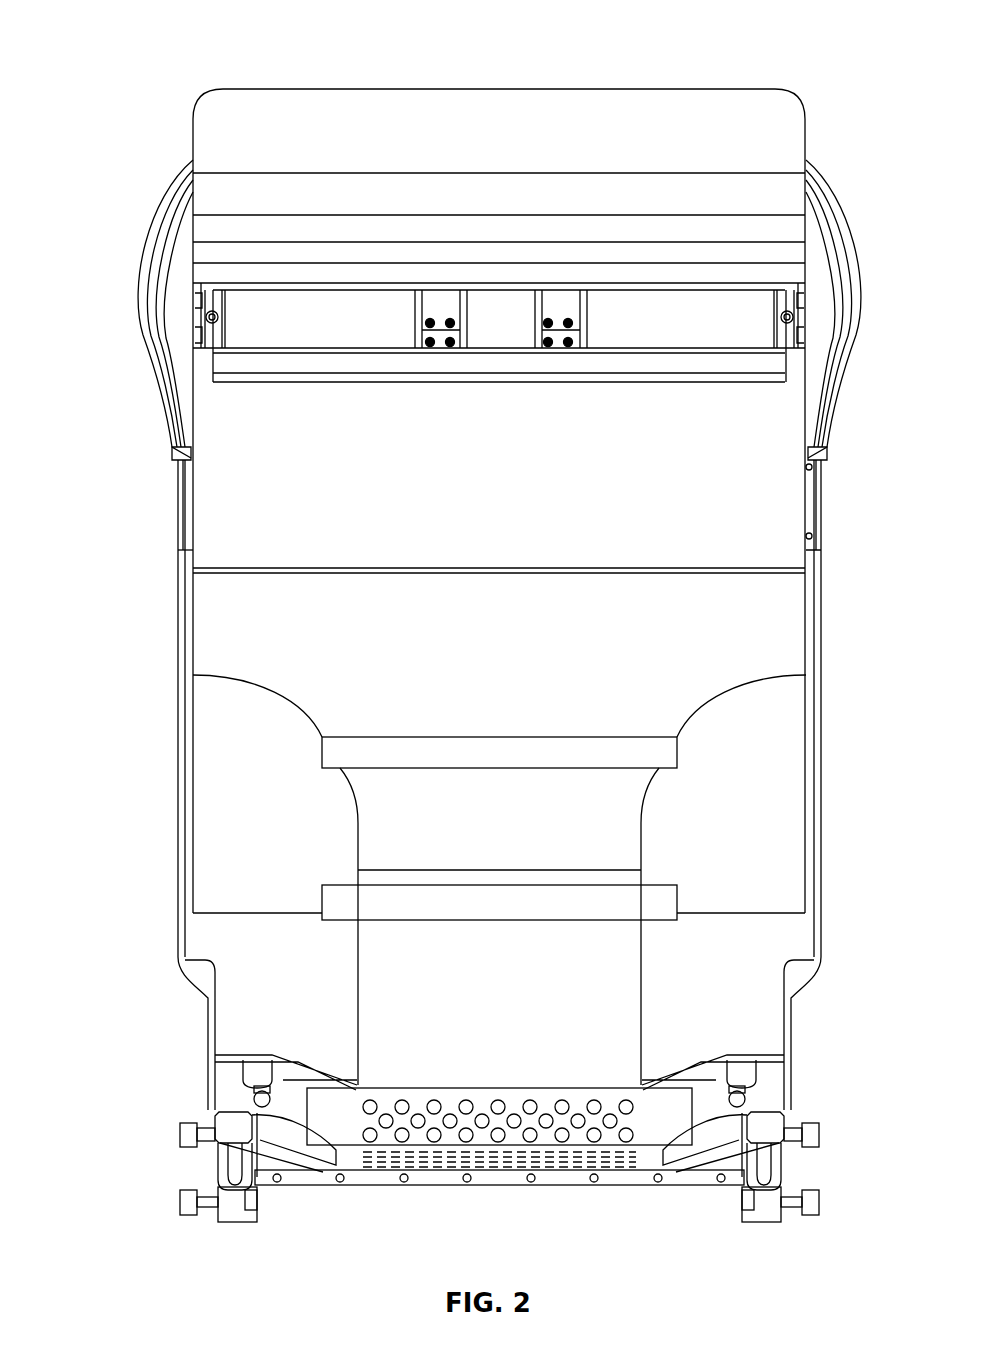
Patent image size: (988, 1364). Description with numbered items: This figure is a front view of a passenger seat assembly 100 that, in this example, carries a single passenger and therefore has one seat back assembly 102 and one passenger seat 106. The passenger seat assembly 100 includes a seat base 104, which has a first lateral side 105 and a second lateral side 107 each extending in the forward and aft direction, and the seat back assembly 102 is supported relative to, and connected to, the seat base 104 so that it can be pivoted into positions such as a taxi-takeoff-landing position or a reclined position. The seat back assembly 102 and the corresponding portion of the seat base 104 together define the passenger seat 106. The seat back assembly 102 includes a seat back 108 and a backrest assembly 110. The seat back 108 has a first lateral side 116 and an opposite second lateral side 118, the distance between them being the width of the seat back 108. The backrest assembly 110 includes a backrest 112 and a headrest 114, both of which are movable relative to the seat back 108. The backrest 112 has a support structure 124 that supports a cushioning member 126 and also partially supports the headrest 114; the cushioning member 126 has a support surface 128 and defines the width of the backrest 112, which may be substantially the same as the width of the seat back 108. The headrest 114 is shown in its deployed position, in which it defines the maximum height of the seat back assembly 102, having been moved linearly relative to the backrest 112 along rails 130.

The passenger seat assembly 100 is at (752, 30).
The seat back assembly 102 is at (222, 70).
The seat base 104 is at (336, 1187).
The first lateral side 105 is at (213, 1125).
The passenger seat 106 is at (110, 182).
The second lateral side 107 is at (782, 1177).
The seat back 108 is at (824, 208).
The backrest assembly 110 is at (123, 290).
The backrest 112 is at (205, 522).
The headrest 114 is at (780, 108).
The first lateral side 116 is at (182, 626).
The second lateral side 118 is at (832, 430).
The support structure 124 is at (645, 340).
The cushioning member 126 is at (207, 755).
The support surface 128 is at (540, 673).
The rails 130 is at (432, 348).